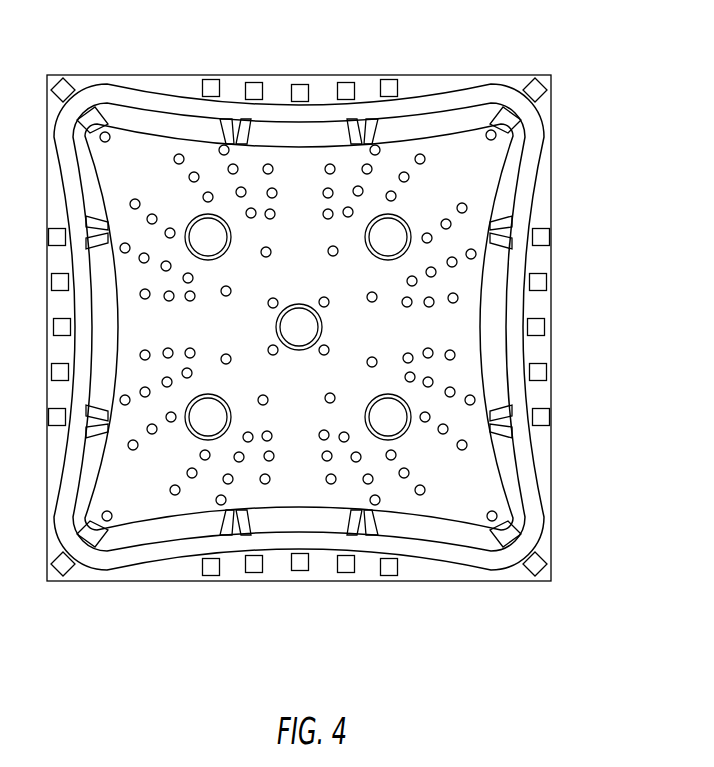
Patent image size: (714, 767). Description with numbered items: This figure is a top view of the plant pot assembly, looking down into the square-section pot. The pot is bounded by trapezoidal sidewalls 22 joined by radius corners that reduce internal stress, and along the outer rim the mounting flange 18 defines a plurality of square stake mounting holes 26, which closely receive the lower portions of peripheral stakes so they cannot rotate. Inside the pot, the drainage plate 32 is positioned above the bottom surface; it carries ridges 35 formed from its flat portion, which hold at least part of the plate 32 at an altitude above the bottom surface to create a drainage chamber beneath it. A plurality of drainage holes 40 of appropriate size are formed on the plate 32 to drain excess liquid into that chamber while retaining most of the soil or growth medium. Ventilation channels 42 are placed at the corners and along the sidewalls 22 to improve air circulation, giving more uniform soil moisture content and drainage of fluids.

The mounting flange 18 is at (556, 257).
The sidewalls 22 is at (522, 457).
The stake mounting holes 26 is at (545, 371).
The drainage plate 32 is at (445, 513).
The ridges 35 is at (203, 215).
The drainage holes 40 is at (468, 205).
The ventilation channels 42 is at (510, 121).